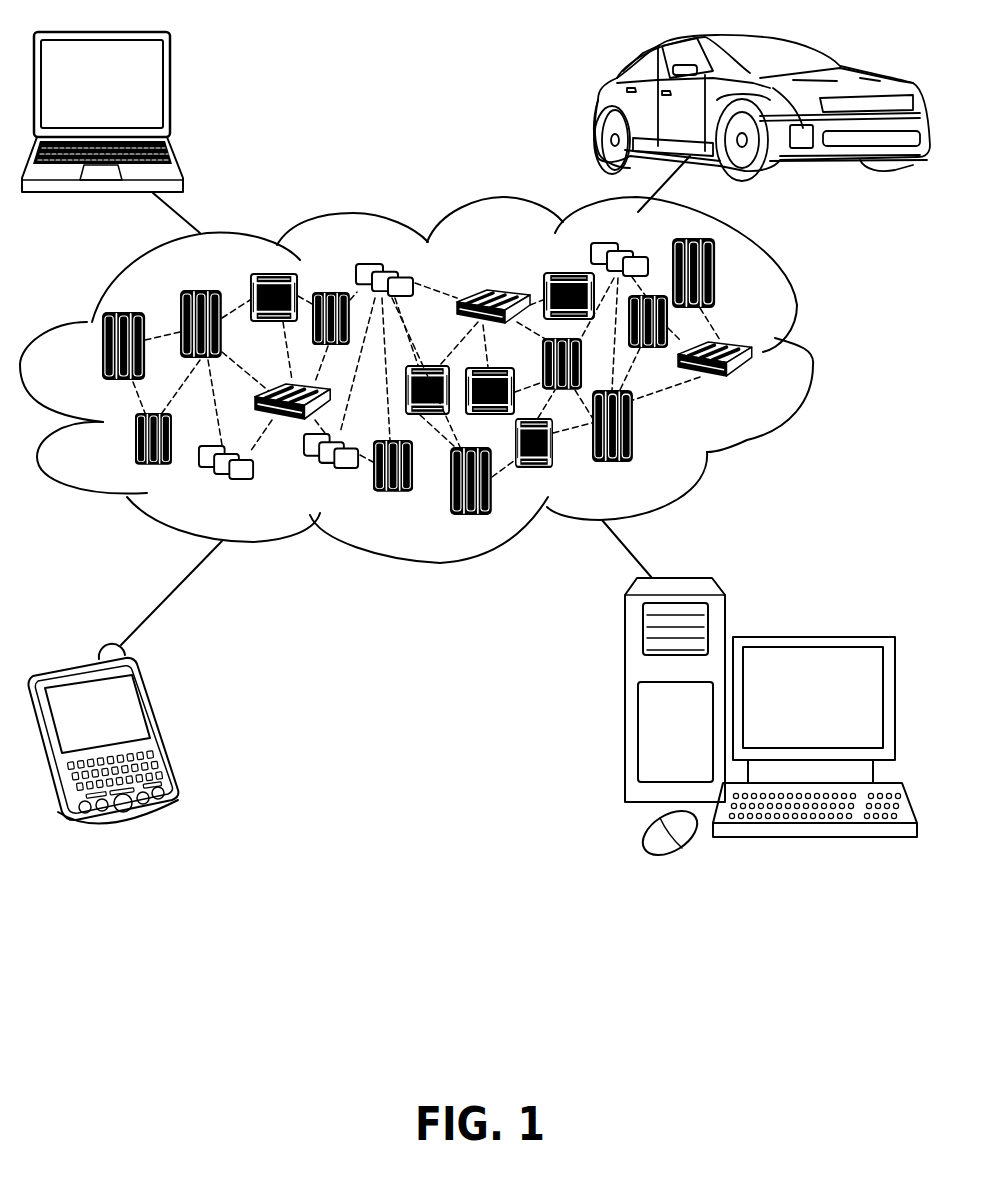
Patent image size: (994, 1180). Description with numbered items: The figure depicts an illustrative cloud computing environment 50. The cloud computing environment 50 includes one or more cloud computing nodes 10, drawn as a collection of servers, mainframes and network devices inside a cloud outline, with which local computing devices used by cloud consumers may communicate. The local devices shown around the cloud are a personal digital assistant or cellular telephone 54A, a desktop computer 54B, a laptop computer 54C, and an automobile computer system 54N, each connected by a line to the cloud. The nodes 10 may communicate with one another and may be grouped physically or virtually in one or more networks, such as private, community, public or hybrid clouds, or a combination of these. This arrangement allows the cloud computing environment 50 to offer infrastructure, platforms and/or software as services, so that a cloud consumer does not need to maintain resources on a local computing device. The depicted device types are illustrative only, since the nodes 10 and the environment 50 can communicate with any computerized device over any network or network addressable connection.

The cloud computing node 10 is at (764, 390).
The cloud computing environment 50 is at (444, 380).
The personal digital assistant or cellular telephone 54A is at (158, 727).
The desktop computer 54B is at (810, 635).
The laptop computer 54C is at (171, 92).
The automobile computer system 54N is at (596, 107).